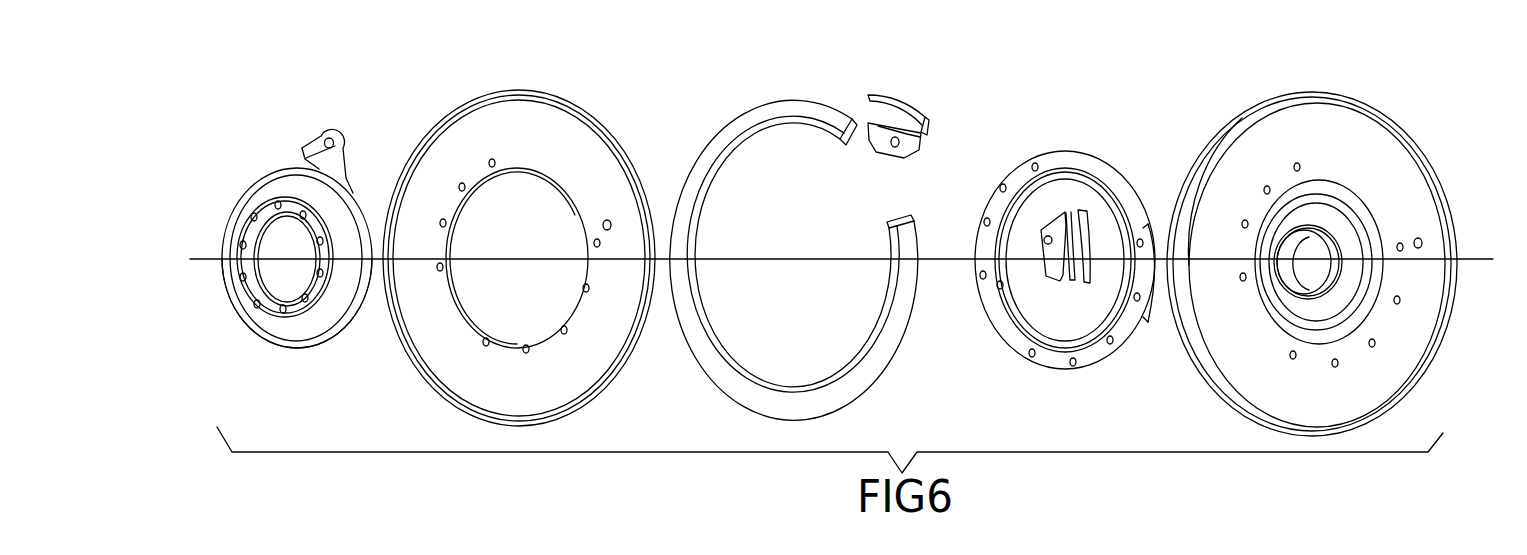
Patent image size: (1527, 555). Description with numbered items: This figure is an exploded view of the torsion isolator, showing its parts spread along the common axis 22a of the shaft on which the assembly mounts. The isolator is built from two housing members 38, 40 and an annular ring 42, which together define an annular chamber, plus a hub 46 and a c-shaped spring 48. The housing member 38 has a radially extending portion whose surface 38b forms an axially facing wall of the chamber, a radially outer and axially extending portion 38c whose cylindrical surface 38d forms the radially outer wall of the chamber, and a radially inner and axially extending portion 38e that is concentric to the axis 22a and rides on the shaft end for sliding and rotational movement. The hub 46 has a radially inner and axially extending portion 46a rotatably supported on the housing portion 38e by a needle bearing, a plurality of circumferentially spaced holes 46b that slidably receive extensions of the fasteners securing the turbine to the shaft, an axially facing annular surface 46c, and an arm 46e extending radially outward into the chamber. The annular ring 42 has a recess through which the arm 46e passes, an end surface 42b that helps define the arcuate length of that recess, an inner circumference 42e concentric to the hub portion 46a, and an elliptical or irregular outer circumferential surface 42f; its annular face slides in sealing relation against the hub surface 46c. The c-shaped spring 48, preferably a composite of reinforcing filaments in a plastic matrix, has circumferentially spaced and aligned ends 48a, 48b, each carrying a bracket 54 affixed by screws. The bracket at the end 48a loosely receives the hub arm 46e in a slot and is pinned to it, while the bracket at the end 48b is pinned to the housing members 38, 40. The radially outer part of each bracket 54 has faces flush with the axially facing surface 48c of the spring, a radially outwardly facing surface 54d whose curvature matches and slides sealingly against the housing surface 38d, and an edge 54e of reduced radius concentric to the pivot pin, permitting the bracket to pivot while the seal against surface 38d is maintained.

The axis 22a is at (565, 256).
The housing member 38 is at (1329, 226).
The surface 38b is at (1282, 113).
The radially outer and axially extending portion 38c is at (1440, 170).
The cylindrical surface 38d is at (1215, 144).
The radially inner and axially extending portion 38e is at (1335, 232).
The housing member 40 is at (519, 213).
The annular ring 42 is at (1038, 238).
The end surface 42b is at (1150, 232).
The inner circumference 42e is at (1000, 290).
The outer circumferential surface 42f is at (1147, 325).
The hub 46 is at (275, 253).
The radially inner and axially extending portion 46a is at (262, 280).
The holes 46b is at (283, 310).
The annular surface 46c is at (320, 344).
The arm 46e is at (340, 158).
The c-shaped spring 48 is at (794, 230).
The spring end 48a is at (834, 128).
The spring end 48b is at (893, 234).
The axially facing surface 48c is at (707, 357).
The bracket 54 is at (955, 177).
The radially outwardly facing surface 54d is at (905, 110).
The edge 54e is at (923, 118).